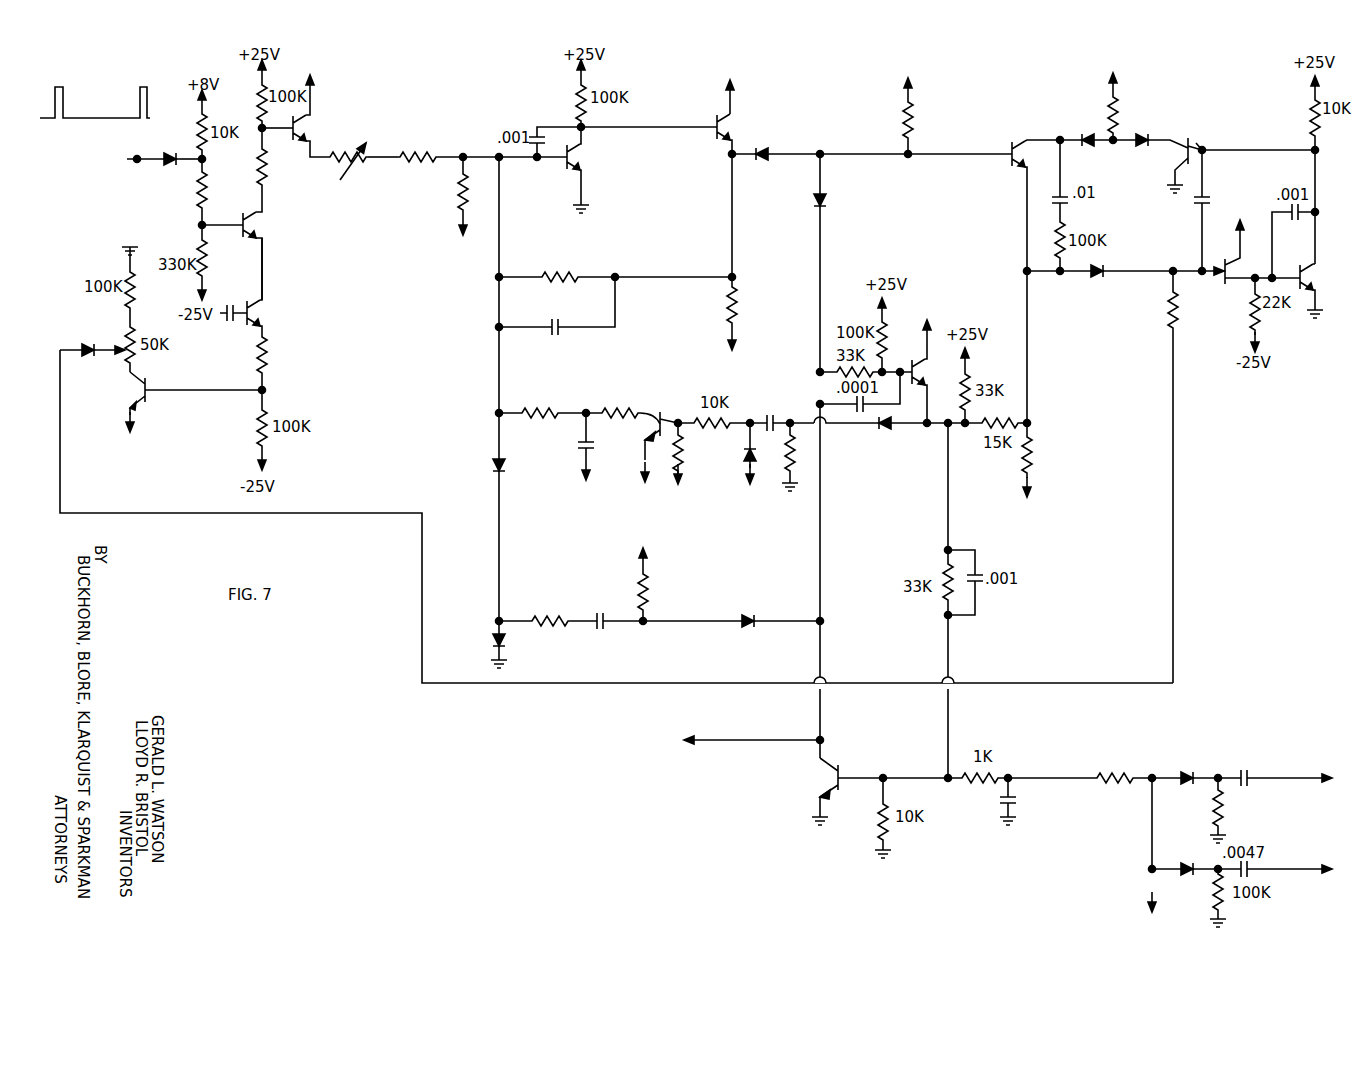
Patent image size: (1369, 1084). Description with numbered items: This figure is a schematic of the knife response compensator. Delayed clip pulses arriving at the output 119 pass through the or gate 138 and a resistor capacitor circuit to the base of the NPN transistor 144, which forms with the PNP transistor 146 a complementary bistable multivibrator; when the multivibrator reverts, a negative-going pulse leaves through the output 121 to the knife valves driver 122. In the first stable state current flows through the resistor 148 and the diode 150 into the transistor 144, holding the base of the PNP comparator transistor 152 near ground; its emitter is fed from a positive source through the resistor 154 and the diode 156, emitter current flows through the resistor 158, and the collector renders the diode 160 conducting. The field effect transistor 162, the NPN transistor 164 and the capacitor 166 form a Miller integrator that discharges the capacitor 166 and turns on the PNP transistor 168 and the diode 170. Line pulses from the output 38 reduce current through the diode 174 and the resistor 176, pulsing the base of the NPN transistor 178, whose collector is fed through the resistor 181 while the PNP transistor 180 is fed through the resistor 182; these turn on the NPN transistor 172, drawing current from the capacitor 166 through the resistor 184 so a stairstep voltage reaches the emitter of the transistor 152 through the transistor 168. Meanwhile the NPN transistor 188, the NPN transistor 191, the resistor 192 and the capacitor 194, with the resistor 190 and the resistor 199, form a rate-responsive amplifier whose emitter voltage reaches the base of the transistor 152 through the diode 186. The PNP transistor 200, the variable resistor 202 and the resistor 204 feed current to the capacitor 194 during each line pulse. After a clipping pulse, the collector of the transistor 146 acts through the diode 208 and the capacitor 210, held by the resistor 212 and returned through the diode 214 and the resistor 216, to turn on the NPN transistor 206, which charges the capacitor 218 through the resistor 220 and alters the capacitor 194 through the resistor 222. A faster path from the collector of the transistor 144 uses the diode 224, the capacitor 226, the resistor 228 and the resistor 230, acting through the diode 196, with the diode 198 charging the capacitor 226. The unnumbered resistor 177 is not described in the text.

The output of the line pulse shaper 38 is at (127, 163).
The resistor 176 is at (137, 155).
The diode 174 is at (182, 152).
The resistor 33K 177 is at (201, 190).
The NPN transistor 178 is at (243, 208).
The resistor 181 is at (277, 156).
The PNP transistor 200 is at (308, 125).
The variable resistor 202 is at (345, 165).
The resistor 204 is at (433, 154).
The resistor 199 is at (460, 200).
The NPN transistor 191 is at (572, 170).
The NPN transistor 188 is at (737, 107).
The diode 186 is at (766, 147).
The resistor 190 is at (738, 321).
The diode 150 is at (826, 200).
The resistor 148 is at (903, 118).
The PNP transistor 152 is at (1008, 160).
The diode 156 is at (1084, 134).
The resistor 154 is at (1110, 99).
The diode 170 is at (1144, 134).
The PNP transistor 168 is at (1193, 141).
The capacitor 166 is at (1196, 200).
The diode 160 is at (1098, 278).
The resistor 184 is at (1177, 318).
The field effect transistor 162 is at (1256, 284).
The NPN transistor 164 is at (1323, 291).
The NPN transistor 172 is at (144, 397).
The PNP transistor 180 is at (258, 304).
The resistor 182 is at (258, 358).
The diode 196 is at (495, 467).
The diode 198 is at (505, 637).
The resistor 192 is at (550, 274).
The capacitor 194 is at (555, 320).
The resistor 222 is at (549, 403).
The capacitor 218 is at (582, 455).
The resistor 220 is at (630, 413).
The NPN transistor 206 is at (662, 412).
The resistor 216 is at (694, 463).
The capacitor 210 is at (786, 420).
The diode 214 is at (746, 460).
The resistor 212 is at (790, 457).
The PNP transistor 146 is at (934, 361).
The diode 208 is at (884, 430).
The resistor 158 is at (1031, 440).
The resistor 228 is at (535, 612).
The capacitor 226 is at (596, 628).
The resistor 230 is at (638, 600).
The diode 224 is at (752, 627).
The output 121 is at (757, 740).
The NPN transistor 144 is at (835, 770).
The output 119 is at (1150, 772).
The or gate 138 is at (1268, 765).
The knife valves driver 122 is at (1205, 557).